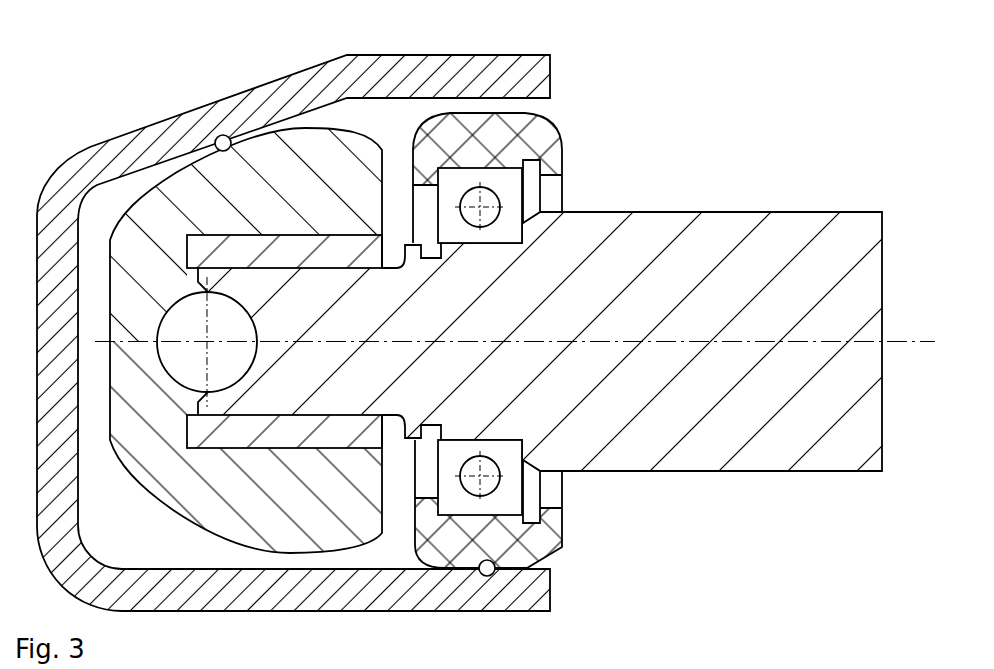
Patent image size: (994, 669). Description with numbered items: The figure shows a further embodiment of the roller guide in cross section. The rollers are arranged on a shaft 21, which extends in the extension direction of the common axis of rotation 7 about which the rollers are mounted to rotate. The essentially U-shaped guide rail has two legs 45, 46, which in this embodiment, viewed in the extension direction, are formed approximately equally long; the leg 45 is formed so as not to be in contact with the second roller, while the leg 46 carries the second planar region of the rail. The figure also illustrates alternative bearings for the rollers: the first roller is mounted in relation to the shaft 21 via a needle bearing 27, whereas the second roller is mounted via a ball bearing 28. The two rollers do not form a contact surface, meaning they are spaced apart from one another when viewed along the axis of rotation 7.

The axis of rotation 7 is at (911, 343).
The shaft 21 is at (804, 222).
The needle bearing 27 is at (318, 243).
The ball bearing 28 is at (510, 193).
The leg 45 is at (170, 120).
The leg 46 is at (360, 612).